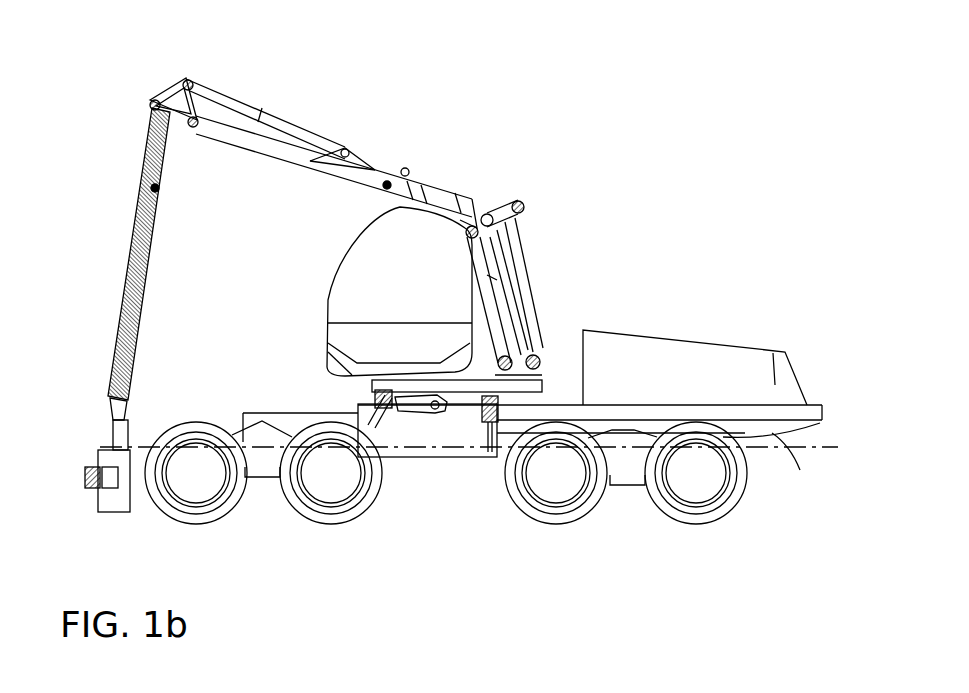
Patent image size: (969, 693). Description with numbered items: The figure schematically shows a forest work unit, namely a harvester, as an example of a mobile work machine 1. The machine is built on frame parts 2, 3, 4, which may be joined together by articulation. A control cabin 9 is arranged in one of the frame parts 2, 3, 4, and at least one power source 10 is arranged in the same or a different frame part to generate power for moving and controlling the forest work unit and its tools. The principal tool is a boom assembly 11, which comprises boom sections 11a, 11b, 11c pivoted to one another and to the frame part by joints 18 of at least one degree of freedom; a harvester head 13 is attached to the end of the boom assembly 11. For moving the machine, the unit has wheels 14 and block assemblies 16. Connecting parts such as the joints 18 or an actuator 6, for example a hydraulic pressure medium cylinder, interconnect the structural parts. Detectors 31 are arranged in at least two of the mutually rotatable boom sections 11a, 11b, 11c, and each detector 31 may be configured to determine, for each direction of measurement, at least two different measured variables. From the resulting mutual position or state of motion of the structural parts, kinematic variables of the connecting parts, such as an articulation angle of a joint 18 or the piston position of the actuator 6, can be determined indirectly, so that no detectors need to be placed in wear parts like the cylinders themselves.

The mobile work machine 1 is at (733, 228).
The frame part 2 is at (296, 425).
The frame part 3 is at (393, 437).
The frame part 4 is at (767, 423).
The actuator 6 is at (487, 408).
The control cabin 9 is at (340, 277).
The power source 10 is at (770, 352).
The boom assembly 11 is at (100, 187).
The boom section 11a is at (135, 301).
The boom section 11b is at (262, 148).
The boom section 11c is at (517, 293).
The harvester head 13 is at (100, 503).
The wheel 14 is at (328, 485).
The block assembly 16 is at (625, 465).
The joint 18 is at (157, 100).
The detector 31 is at (158, 188).